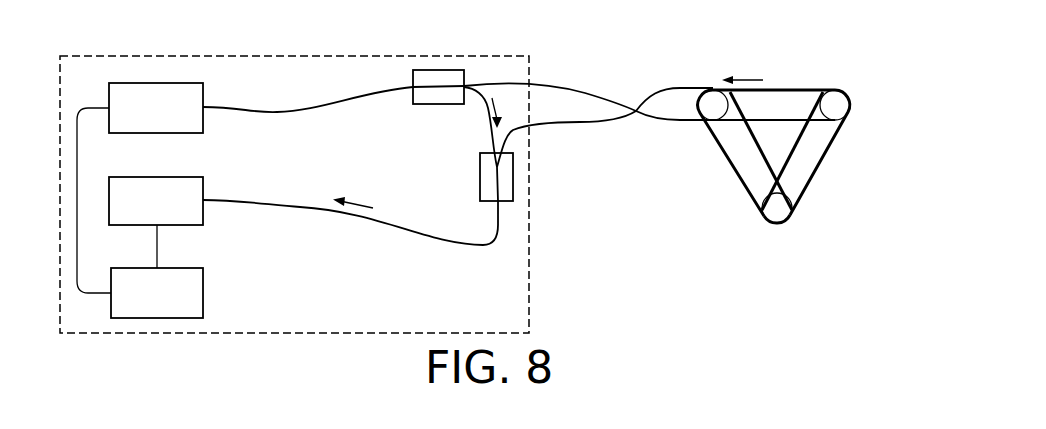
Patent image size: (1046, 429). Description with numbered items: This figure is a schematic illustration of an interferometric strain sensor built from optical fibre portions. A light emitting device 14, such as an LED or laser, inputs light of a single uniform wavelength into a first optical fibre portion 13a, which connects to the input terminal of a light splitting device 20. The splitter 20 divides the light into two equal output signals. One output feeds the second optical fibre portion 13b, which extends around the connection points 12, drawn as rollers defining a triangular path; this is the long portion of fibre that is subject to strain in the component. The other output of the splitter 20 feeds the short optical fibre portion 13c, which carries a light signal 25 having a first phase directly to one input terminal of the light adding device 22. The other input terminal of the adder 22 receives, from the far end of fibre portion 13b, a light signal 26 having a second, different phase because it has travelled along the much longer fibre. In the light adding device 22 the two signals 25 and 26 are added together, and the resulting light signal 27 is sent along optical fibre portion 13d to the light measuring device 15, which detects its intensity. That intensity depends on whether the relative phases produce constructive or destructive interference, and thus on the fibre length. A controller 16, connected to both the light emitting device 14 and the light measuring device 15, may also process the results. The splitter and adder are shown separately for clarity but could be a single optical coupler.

The connection points 12 is at (712, 92).
The first optical fibre portion 13a is at (277, 114).
The second optical fibre portion 13b is at (795, 87).
The optical fibre portion 13c is at (483, 117).
The optical fibre portion 13d is at (295, 208).
The light emitting device 14 is at (142, 120).
The light measuring device 15 is at (142, 213).
The controller 16 is at (143, 305).
The light splitting device 20 is at (437, 70).
The light adding device 22 is at (514, 162).
The light signal 25 is at (495, 100).
The light signal 26 is at (741, 73).
The resulting light signal 27 is at (360, 203).